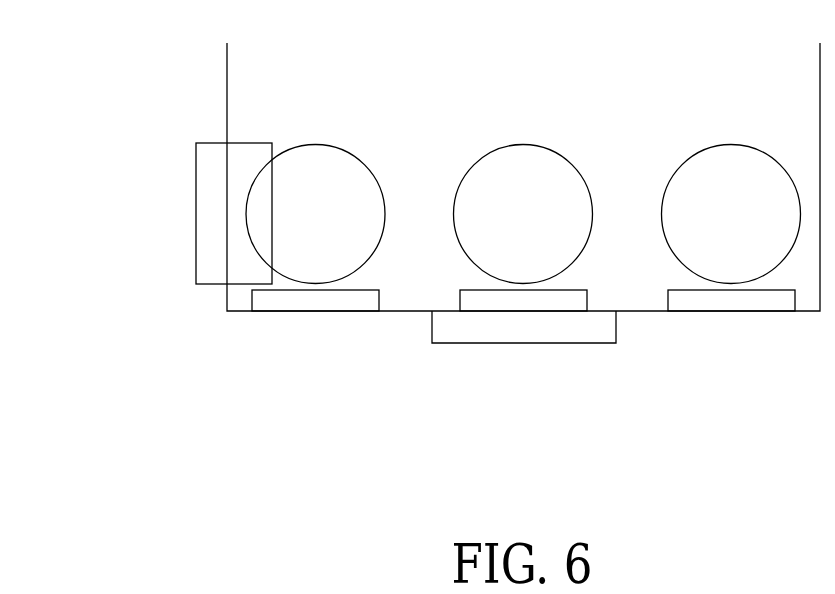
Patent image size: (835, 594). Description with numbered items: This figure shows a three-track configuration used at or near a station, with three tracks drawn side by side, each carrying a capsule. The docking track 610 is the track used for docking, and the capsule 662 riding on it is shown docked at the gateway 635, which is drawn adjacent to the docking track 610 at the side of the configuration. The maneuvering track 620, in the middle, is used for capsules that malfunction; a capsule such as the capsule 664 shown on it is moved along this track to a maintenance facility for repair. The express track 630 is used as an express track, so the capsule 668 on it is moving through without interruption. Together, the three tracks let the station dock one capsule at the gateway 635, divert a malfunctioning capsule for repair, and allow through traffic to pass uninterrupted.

The docking track 610 is at (315, 244).
The maneuvering track 620 is at (523, 244).
The express track 630 is at (731, 244).
The gateway 635 is at (196, 212).
The capsule 662 is at (315, 145).
The capsule 664 is at (525, 145).
The capsule 668 is at (731, 145).